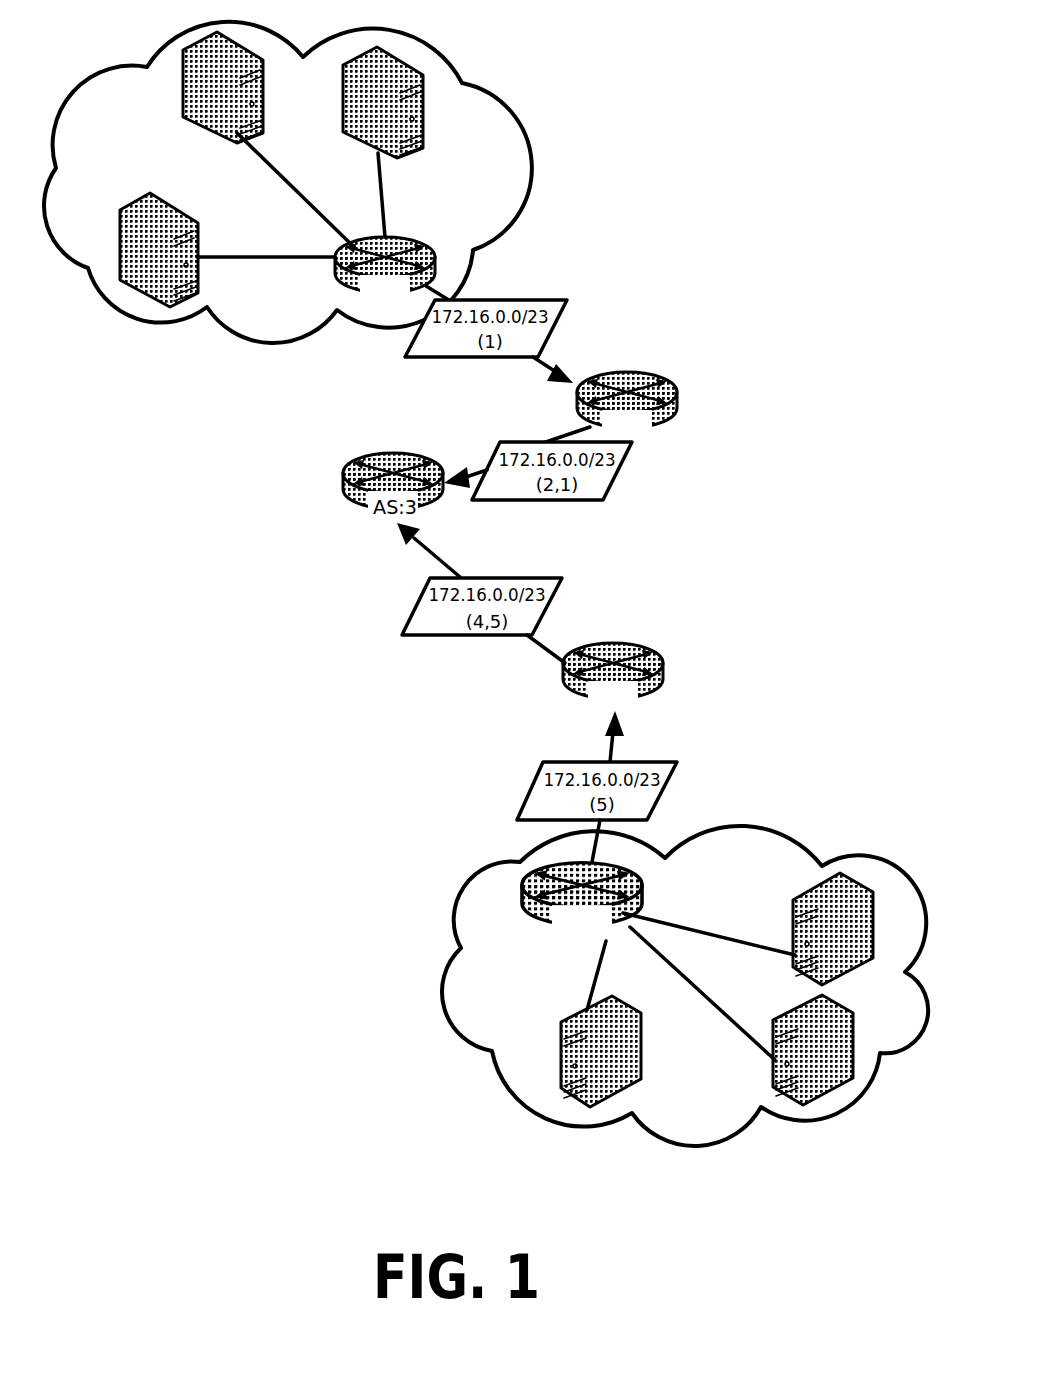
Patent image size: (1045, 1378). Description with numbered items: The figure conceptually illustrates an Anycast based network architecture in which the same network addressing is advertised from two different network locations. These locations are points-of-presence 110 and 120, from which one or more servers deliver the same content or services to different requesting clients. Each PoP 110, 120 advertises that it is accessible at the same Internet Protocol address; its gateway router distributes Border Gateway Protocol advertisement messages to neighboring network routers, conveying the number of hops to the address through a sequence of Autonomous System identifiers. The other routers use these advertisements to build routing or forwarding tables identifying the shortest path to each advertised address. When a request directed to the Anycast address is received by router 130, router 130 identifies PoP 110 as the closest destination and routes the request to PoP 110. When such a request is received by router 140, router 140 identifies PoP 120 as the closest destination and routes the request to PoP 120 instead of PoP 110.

The point-of-presence 110 is at (507, 100).
The point-of-presence 120 is at (444, 994).
The router 130 is at (678, 397).
The router 140 is at (665, 672).